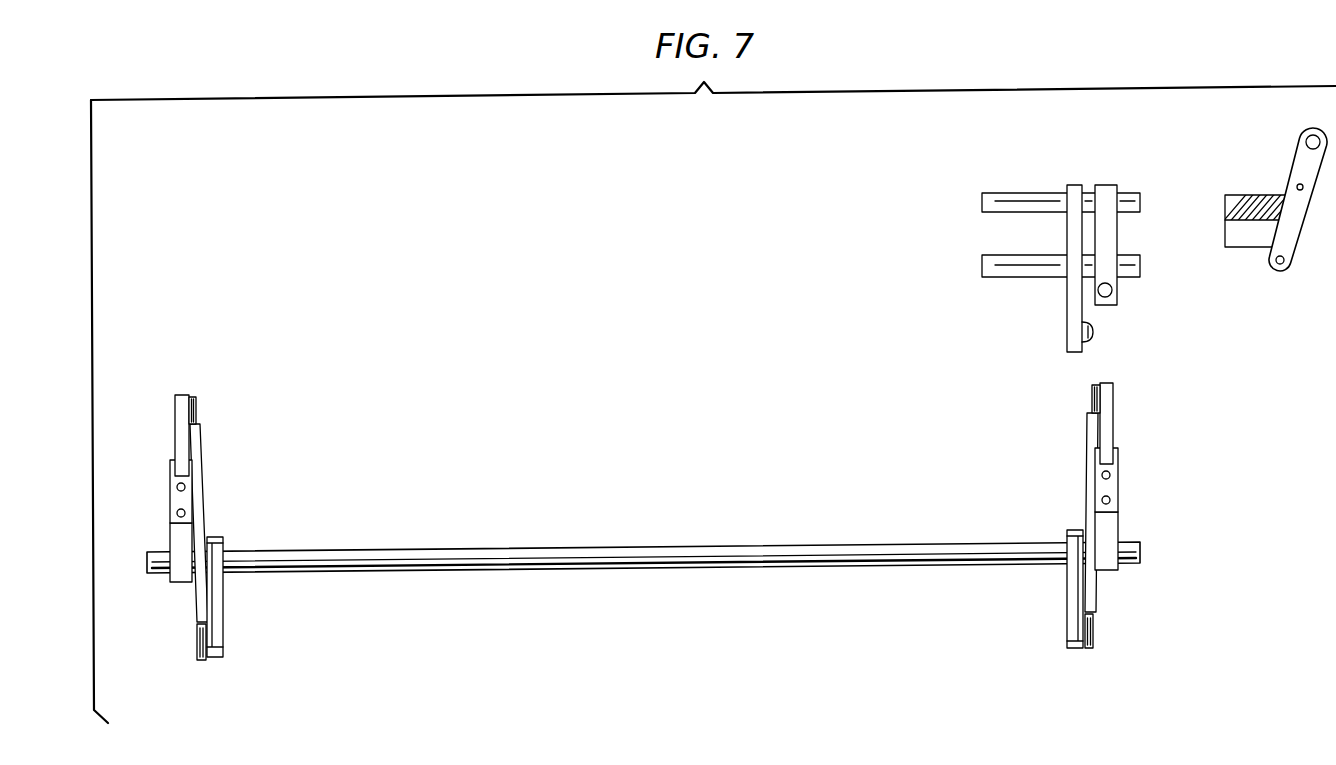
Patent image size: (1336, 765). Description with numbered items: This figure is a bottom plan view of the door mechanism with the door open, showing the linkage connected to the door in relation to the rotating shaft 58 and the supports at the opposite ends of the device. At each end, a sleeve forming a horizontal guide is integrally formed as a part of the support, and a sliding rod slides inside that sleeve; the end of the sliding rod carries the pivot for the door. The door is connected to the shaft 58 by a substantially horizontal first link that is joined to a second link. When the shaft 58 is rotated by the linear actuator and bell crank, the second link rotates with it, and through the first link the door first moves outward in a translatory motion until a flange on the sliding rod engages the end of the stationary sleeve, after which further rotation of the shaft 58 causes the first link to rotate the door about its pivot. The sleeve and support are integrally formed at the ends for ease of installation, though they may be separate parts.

The rotating shaft 58 is at (601, 569).